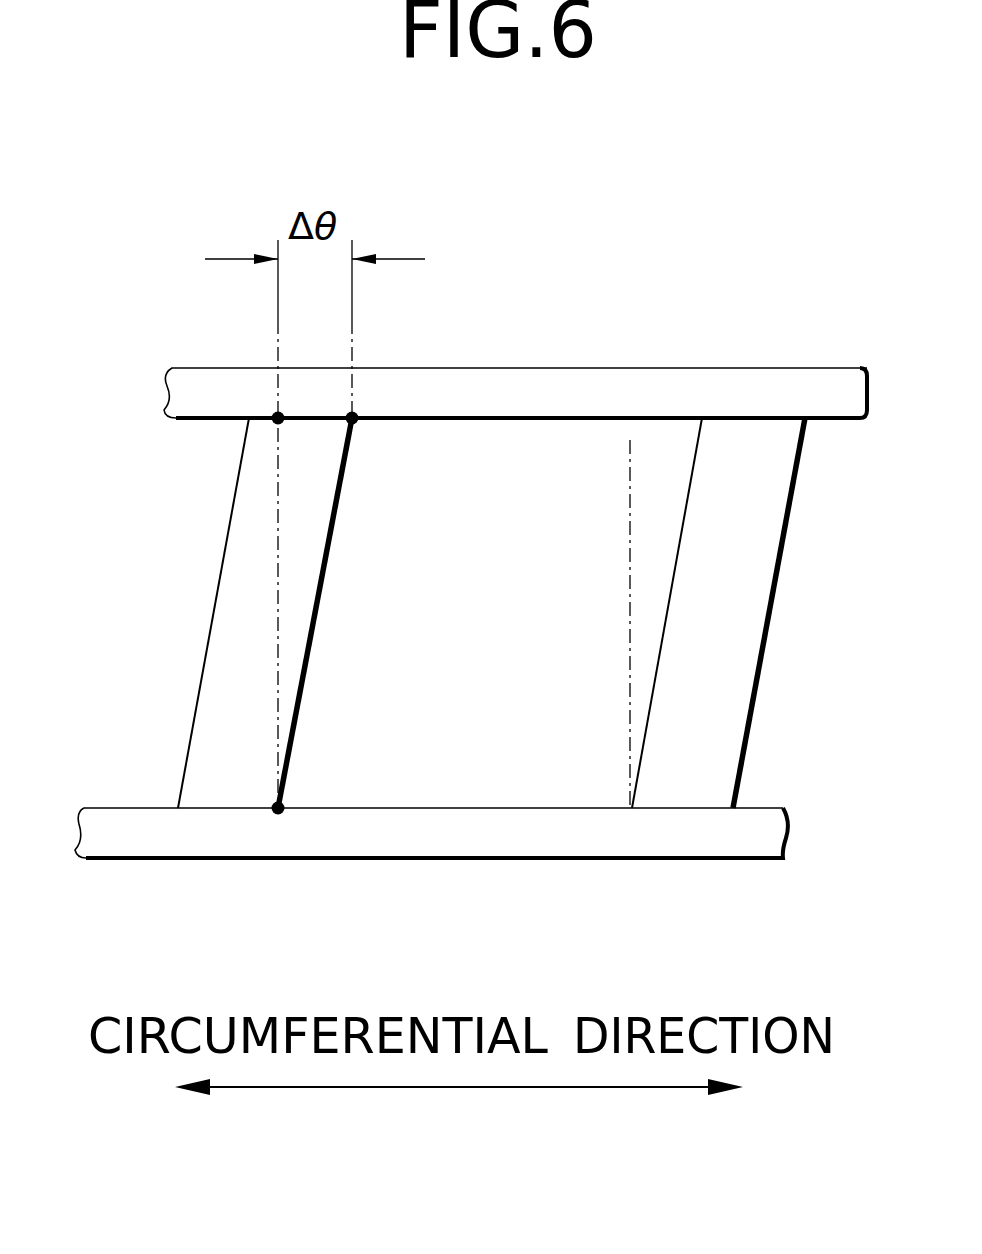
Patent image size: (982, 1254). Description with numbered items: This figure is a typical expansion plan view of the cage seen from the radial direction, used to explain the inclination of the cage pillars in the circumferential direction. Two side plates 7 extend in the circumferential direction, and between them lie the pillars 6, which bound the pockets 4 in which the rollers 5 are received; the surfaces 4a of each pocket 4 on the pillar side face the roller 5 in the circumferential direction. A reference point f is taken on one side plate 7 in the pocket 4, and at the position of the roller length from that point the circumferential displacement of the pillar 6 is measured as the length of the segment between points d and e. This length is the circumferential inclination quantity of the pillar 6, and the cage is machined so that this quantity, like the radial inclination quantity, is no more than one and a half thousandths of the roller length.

The pocket 4 is at (552, 766).
The pocket surface 4a is at (690, 470).
The roller 5 is at (630, 585).
The pillar 6 is at (215, 655).
The side plate 7 is at (545, 380).
The segment endpoint d is at (278, 416).
The segment endpoint e is at (352, 416).
The reference point f is at (278, 810).